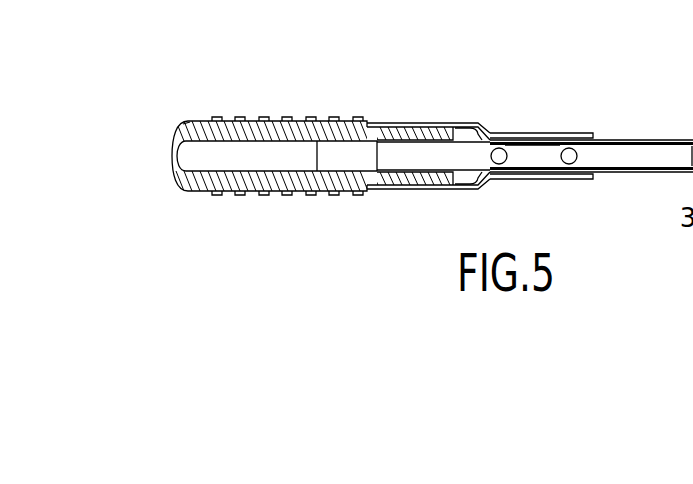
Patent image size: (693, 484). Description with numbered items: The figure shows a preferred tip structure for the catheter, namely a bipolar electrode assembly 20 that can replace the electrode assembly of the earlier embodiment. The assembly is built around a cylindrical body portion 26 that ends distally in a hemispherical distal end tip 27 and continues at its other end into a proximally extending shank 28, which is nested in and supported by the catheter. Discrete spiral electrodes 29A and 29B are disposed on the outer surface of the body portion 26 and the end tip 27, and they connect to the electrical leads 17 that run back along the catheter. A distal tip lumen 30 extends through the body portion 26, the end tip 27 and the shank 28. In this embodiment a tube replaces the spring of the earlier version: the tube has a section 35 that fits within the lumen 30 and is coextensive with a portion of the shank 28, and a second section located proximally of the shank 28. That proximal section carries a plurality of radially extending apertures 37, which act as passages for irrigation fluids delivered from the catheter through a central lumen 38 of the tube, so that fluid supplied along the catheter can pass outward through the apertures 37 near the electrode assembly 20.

The electrical leads 17 is at (594, 134).
The bipolar electrode assembly 20 is at (368, 105).
The cylindrical body portion 26 is at (211, 129).
The hemispherical distal end tip 27 is at (178, 138).
The shank 28 is at (438, 126).
The spiral electrode 29A is at (288, 116).
The spiral electrode 29B is at (263, 116).
The distal tip lumen 30 is at (200, 164).
The tube section 35 is at (414, 177).
The radially extending apertures 37 is at (496, 148).
The central lumen 38 is at (519, 142).